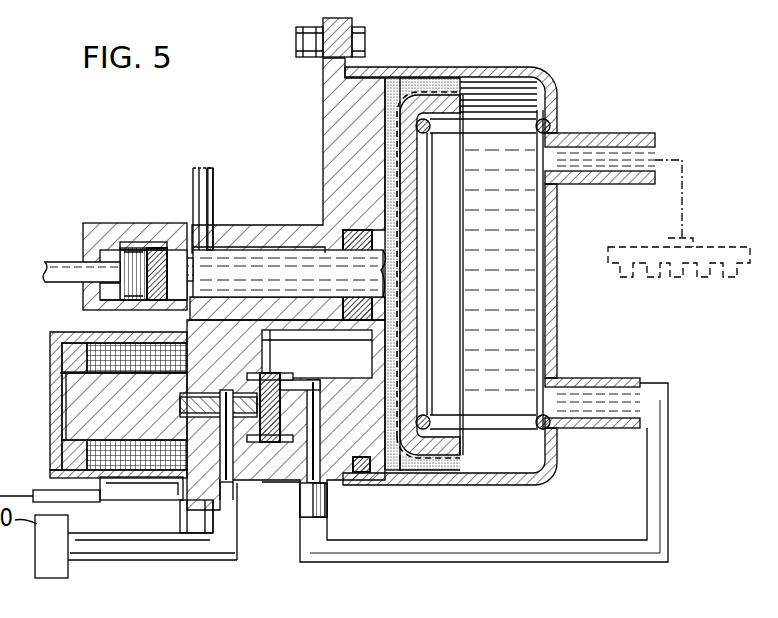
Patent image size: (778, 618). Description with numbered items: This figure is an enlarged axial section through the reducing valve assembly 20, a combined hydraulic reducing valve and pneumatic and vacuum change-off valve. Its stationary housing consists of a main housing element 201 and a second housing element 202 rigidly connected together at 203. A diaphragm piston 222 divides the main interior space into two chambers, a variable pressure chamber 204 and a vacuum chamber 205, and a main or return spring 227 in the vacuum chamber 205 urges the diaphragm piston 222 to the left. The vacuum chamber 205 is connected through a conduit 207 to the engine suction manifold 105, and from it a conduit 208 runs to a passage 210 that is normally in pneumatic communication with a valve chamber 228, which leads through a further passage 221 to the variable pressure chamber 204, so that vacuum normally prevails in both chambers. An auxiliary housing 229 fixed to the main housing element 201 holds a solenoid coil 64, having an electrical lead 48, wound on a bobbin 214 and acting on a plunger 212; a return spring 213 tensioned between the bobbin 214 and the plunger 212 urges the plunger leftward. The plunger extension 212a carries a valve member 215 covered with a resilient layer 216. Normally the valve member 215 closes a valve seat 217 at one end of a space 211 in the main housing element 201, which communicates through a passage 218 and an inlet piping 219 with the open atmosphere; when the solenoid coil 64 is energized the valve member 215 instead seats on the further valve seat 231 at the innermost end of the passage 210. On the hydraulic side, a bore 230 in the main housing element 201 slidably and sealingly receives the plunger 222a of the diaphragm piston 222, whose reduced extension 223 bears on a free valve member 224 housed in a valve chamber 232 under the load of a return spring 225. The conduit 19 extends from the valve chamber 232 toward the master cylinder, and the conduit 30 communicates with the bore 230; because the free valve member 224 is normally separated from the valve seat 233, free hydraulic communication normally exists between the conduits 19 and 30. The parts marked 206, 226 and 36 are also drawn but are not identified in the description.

The reducing valve assembly 20 is at (462, 253).
The housing element 202 is at (470, 67).
The connection 203 is at (365, 33).
The variable pressure chamber 204 is at (380, 125).
The vacuum chamber 205 is at (506, 265).
The output shaft port 206 is at (615, 150).
The conduit 207 is at (688, 205).
The engine suction manifold 105 is at (727, 280).
The main housing element 201 is at (292, 252).
The diaphragm piston 222 is at (424, 279).
The plunger 222a is at (280, 252).
The passage 221 is at (430, 342).
The main or return spring 227 is at (478, 415).
The valve seat 233 is at (198, 262).
The shaft extension 226 is at (205, 242).
The conduit 30 is at (200, 172).
The valve chamber 232 is at (100, 245).
The return spring 225 is at (127, 270).
The reduced extension 223 is at (157, 262).
The free valve member 224 is at (140, 243).
The bore 230 is at (118, 291).
The conduit 19 is at (55, 264).
The bobbin 214 is at (62, 340).
The space 211 is at (133, 478).
The solenoid coil 64 is at (100, 345).
The auxiliary housing 229 is at (68, 452).
The plunger 212 is at (70, 408).
The return spring 213 is at (65, 378).
The electrical lead 48 is at (35, 493).
The inlet piping 219 is at (155, 545).
The passage 218 is at (185, 487).
The valve seat 217 is at (215, 498).
The resilient layer 216 is at (211, 547).
The housing bottom 36 is at (270, 496).
The valve member 215 is at (295, 518).
The passage 210 is at (328, 490).
The valve seat 231 is at (345, 485).
The conduit 208 is at (438, 545).
The extension 212a is at (225, 392).
The valve chamber 228 is at (300, 385).